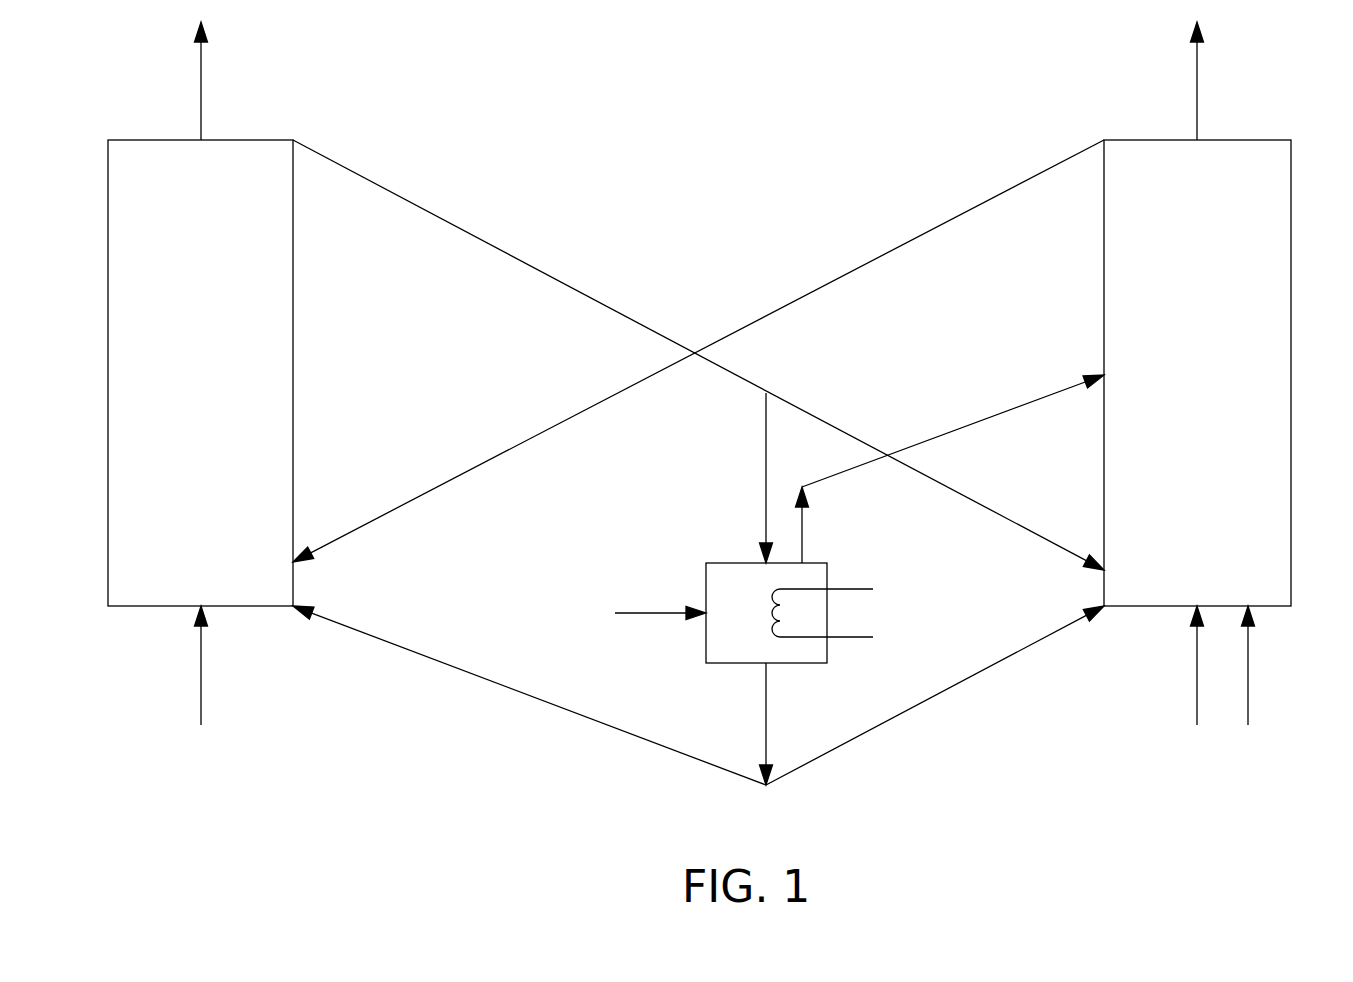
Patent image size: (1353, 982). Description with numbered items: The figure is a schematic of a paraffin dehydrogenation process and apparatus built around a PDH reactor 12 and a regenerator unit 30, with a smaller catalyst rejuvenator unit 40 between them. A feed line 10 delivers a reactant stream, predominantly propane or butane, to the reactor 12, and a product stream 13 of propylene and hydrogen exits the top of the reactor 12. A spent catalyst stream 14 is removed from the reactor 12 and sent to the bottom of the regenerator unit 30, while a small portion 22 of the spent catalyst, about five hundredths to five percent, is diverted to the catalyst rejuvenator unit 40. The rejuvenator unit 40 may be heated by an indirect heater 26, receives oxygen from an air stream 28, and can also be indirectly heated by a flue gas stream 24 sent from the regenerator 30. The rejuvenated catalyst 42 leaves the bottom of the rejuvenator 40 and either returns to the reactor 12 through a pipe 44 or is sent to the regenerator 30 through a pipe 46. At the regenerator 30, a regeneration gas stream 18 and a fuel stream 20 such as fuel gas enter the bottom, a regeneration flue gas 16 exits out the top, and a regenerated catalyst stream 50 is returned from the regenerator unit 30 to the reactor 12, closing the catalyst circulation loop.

The feed line 10 is at (201, 666).
The PDH reactor 12 is at (130, 140).
The product stream 13 is at (201, 80).
The spent catalyst stream 14 is at (528, 268).
The regeneration flue gas 16 is at (1197, 80).
The regeneration gas stream 18 is at (1197, 664).
The fuel stream 20 is at (1248, 664).
The small portion of spent catalyst 22 is at (766, 478).
The flue gas stream 24 is at (993, 416).
The indirect heater 26 is at (862, 590).
The air stream 28 is at (620, 613).
The regenerator unit 30 is at (1270, 140).
The catalyst rejuvenator unit 40 is at (720, 563).
The rejuvenated catalyst 42 is at (766, 708).
The pipe 44 is at (525, 696).
The pipe 46 is at (940, 696).
The regenerated catalyst stream 50 is at (896, 250).